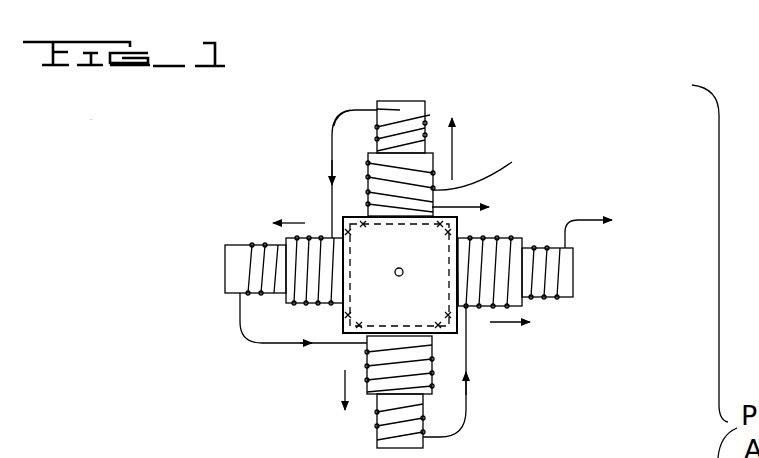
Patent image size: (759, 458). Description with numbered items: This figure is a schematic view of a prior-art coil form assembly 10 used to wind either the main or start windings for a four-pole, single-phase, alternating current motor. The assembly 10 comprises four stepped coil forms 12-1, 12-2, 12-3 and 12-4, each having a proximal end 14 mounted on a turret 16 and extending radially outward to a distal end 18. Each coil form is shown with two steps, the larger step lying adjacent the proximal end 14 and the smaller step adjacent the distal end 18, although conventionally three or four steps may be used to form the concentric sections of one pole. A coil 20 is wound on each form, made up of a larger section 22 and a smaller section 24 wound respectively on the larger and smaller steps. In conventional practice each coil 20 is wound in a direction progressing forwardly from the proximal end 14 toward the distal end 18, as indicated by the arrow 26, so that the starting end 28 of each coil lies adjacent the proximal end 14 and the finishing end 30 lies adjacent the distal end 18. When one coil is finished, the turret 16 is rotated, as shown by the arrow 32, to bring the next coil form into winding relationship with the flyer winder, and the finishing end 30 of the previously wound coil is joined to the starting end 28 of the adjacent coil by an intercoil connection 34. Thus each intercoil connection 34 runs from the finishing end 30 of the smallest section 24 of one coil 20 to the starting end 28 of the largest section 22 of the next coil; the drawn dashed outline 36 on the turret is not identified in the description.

The coil form assembly 10 is at (572, 112).
The stepped coil form 12-1 is at (410, 90).
The stepped coil form 12-2 is at (228, 240).
The stepped coil form 12-3 is at (350, 429).
The stepped coil form 12-4 is at (555, 228).
The proximal end 14 is at (462, 243).
The turret 16 is at (434, 300).
The distal end 18 is at (576, 273).
The coil 20 is at (430, 114).
The larger section 22 is at (488, 164).
The smaller section 24 is at (427, 134).
The arrow 26 is at (458, 144).
The starting end 28 is at (477, 203).
The finishing end 30 is at (362, 108).
The arrow 32 is at (377, 272).
The intercoil connection 34 is at (330, 140).
The core outline 36 is at (372, 318).